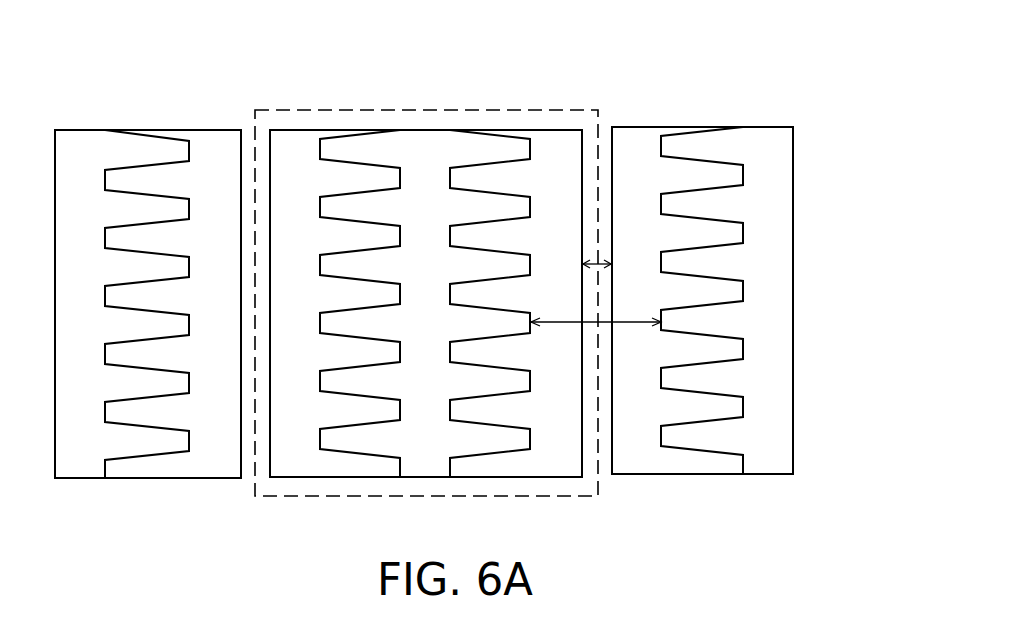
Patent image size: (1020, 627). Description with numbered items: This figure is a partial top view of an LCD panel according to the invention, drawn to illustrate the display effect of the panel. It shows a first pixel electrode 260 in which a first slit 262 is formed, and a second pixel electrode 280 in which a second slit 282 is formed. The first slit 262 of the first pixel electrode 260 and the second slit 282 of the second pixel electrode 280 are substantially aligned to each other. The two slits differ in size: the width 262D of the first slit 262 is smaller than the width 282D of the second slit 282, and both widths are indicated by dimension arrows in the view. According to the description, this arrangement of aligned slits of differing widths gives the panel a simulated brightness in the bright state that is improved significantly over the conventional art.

The first pixel electrode 260 is at (552, 148).
The first slit 262 is at (603, 129).
The second pixel electrode 280 is at (413, 150).
The second slit 282 is at (650, 181).
The width of the first slit 262D is at (601, 264).
The width of the second slit 282D is at (627, 321).